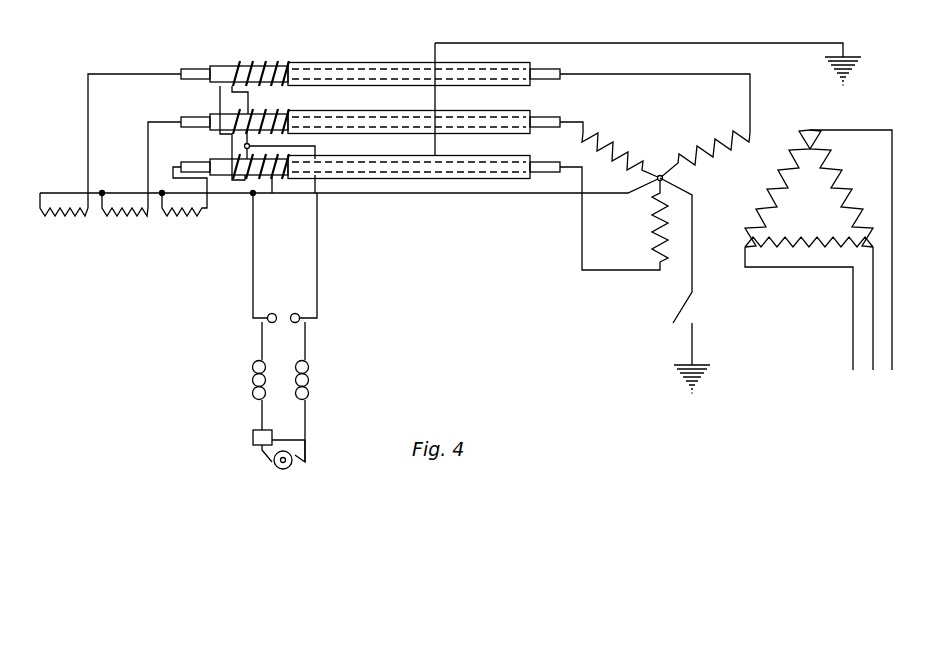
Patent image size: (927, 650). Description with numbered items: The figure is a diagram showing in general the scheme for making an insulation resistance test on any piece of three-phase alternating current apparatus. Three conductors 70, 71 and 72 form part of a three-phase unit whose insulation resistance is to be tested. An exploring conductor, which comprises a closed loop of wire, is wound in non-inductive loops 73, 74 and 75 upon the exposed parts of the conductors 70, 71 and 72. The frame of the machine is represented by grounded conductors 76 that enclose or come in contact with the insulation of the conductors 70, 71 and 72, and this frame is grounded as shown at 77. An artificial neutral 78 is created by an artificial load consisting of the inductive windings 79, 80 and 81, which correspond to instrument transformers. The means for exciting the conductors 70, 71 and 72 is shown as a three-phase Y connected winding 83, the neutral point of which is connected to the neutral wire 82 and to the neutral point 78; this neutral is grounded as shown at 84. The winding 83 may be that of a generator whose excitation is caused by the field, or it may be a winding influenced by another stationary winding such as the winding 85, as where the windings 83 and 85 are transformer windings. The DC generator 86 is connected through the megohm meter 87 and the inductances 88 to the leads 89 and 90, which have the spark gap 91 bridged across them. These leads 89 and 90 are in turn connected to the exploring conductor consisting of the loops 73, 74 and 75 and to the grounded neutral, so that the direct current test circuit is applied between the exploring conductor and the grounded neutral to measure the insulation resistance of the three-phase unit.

The conductor 70 is at (203, 69).
The conductor 71 is at (203, 117).
The conductor 72 is at (196, 162).
The non-inductive loop 73 is at (284, 50).
The non-inductive loop 74 is at (257, 113).
The non-inductive loop 75 is at (273, 188).
The grounded conductors 76 is at (668, 43).
The ground 77 is at (852, 81).
The artificial neutral 78 is at (508, 195).
The inductive winding 79 is at (71, 217).
The inductive winding 80 is at (123, 216).
The inductive winding 81 is at (188, 216).
The neutral wire 82 is at (692, 266).
The three-phase Y connected winding 83 is at (669, 166).
The ground 84 is at (700, 383).
The stationary winding 85 is at (810, 238).
The DC generator 86 is at (276, 469).
The megohm meter 87 is at (253, 436).
The inductances 88 is at (306, 398).
The lead 89 is at (253, 262).
The lead 90 is at (317, 268).
The spark gap 91 is at (297, 313).